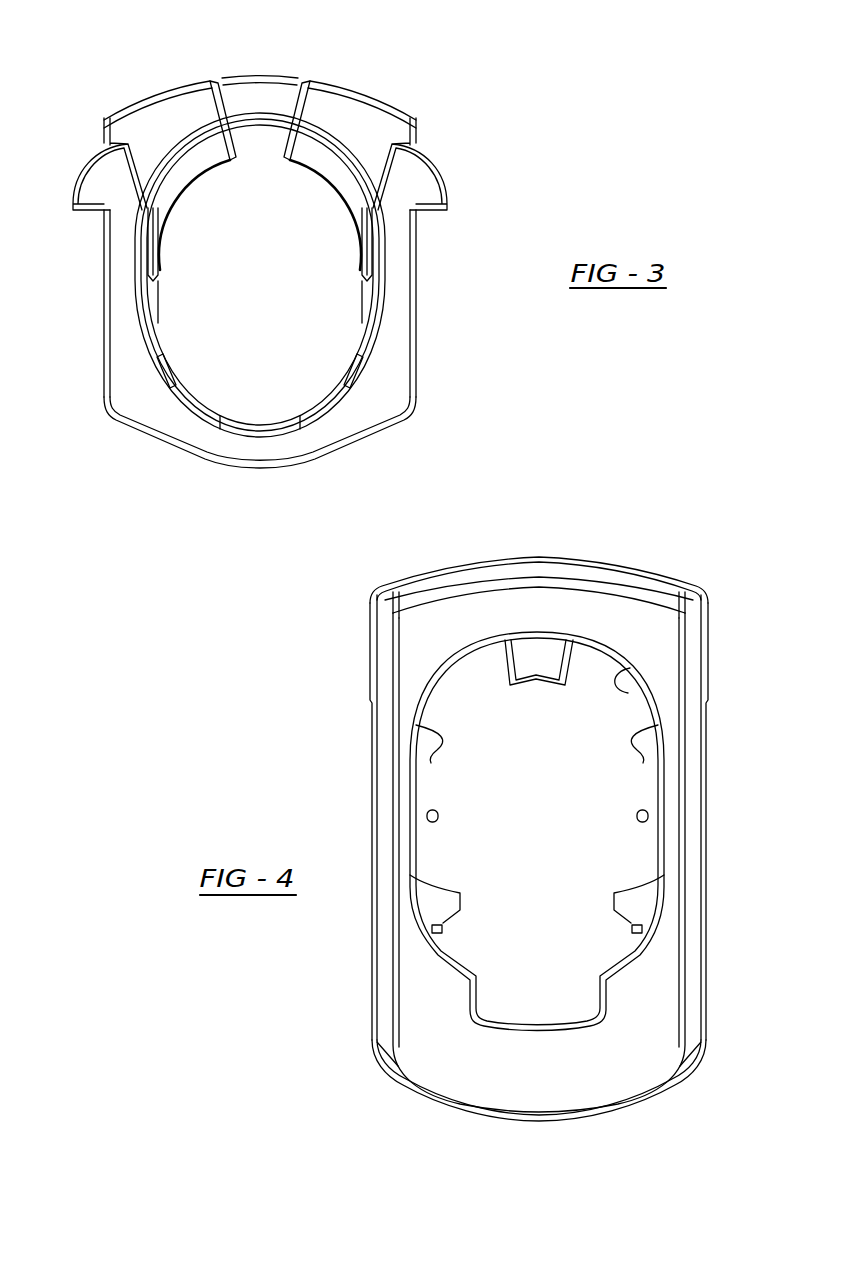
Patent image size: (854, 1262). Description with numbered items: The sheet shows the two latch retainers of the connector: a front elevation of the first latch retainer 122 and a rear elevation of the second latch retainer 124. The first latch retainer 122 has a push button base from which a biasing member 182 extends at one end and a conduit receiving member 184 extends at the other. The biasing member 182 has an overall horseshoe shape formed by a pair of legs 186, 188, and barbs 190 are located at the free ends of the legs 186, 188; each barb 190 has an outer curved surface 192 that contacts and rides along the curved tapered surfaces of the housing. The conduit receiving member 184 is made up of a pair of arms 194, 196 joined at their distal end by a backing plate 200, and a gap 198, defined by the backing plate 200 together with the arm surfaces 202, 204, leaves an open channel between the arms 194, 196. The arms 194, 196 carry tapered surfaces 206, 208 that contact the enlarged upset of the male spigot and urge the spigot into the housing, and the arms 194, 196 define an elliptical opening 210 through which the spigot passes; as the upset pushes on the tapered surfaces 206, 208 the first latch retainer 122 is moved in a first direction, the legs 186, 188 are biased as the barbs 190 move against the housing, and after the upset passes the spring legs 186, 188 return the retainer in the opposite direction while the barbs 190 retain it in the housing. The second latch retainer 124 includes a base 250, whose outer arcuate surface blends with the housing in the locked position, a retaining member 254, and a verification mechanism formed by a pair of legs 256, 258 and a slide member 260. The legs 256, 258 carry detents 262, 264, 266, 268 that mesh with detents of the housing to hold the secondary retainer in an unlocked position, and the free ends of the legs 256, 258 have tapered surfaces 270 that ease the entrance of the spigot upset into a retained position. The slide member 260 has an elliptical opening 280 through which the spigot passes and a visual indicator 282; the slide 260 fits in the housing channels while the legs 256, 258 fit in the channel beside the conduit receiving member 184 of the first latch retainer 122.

In FIG. 3, the first latch retainer 122 is at (138, 460).
In FIG. 3, the biasing member 182 is at (403, 312).
In FIG. 3, the conduit receiving member 184 is at (419, 112).
In FIG. 3, the leg 186 is at (117, 305).
In FIG. 3, the leg 188 is at (403, 252).
In FIG. 3, the barb 190 is at (423, 187).
In FIG. 3, the outer curved surface 192 is at (88, 164).
In FIG. 3, the arm 194 is at (150, 127).
In FIG. 3, the arm 196 is at (380, 131).
In FIG. 3, the gap 198 is at (283, 95).
In FIG. 3, the backing plate 200 is at (253, 100).
In FIG. 3, the arm surface 202 is at (228, 100).
In FIG. 3, the arm surface 204 is at (303, 80).
In FIG. 3, the tapered surface 206 is at (202, 165).
In FIG. 3, the tapered surface 208 is at (320, 163).
In FIG. 3, the elliptical opening 210 is at (368, 308).
In FIG. 4, the second latch retainer 124 is at (712, 849).
In FIG. 4, the base 250 is at (550, 557).
In FIG. 4, the retaining member 254 is at (545, 653).
In FIG. 4, the leg 256 is at (628, 735).
In FIG. 4, the leg 258 is at (447, 737).
In FIG. 4, the slide member 260 is at (675, 1034).
In FIG. 4, the detent 262 is at (647, 815).
In FIG. 4, the detent 264 is at (432, 815).
In FIG. 4, the detent 266 is at (440, 957).
In FIG. 4, the detent 268 is at (640, 951).
In FIG. 4, the tapered surface 270 is at (443, 903).
In FIG. 4, the elliptical opening 280 is at (612, 690).
In FIG. 4, the visual indicator 282 is at (565, 1077).